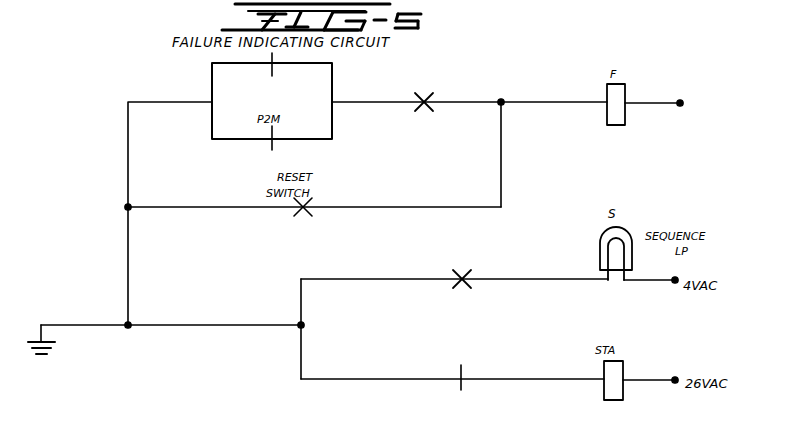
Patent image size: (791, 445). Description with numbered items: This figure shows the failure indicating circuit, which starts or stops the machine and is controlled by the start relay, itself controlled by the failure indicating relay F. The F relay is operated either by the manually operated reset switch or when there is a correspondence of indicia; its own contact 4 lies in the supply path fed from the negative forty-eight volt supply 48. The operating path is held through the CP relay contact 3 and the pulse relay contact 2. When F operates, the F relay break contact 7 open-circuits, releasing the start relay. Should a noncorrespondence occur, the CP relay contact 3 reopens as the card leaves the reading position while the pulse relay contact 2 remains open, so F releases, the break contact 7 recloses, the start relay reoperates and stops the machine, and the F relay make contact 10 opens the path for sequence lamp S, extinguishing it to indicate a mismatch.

The 3BCP contact 3 is at (280, 71).
The 2BP2M contact 2 is at (276, 145).
The F relay contact 4 is at (414, 103).
The -48V supply 48 is at (681, 98).
The 10MF contact 10 is at (469, 277).
The 7BF contact 7 is at (466, 375).